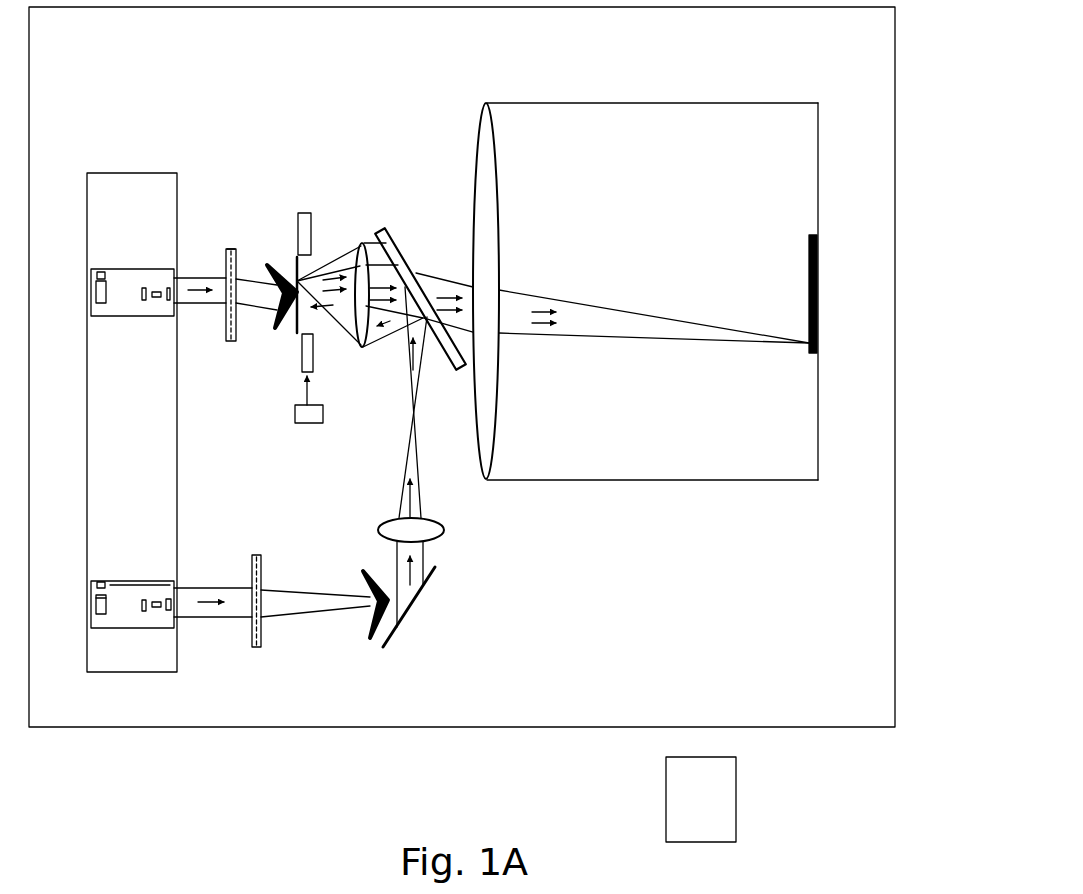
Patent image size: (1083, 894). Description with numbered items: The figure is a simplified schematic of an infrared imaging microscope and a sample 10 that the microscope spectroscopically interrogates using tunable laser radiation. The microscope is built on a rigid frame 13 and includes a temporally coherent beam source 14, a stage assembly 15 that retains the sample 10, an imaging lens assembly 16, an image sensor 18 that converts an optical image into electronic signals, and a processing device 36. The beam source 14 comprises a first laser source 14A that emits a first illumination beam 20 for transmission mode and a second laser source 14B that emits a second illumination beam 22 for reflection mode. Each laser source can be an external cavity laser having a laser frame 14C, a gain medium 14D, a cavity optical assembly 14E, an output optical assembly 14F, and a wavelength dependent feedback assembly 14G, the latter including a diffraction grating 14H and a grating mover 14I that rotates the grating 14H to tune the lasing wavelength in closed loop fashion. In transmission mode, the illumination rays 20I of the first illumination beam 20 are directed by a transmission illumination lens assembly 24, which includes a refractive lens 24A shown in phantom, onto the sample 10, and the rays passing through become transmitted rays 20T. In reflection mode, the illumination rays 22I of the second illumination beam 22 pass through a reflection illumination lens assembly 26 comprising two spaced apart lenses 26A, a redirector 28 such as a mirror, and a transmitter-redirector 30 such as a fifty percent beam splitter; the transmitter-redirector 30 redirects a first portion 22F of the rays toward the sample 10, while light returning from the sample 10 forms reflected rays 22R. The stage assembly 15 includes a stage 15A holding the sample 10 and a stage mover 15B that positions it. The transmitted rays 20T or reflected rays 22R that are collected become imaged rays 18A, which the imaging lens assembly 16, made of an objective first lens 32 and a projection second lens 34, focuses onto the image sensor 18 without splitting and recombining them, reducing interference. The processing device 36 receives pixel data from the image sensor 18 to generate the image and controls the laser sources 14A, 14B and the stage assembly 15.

The sample 10 is at (297, 267).
The rigid frame 13 is at (128, 67).
The temporally coherent beam source 14 is at (152, 457).
The first laser source 14A is at (93, 291).
The second laser source 14B is at (91, 624).
The laser frame 14C is at (117, 585).
The gain medium 14D is at (157, 602).
The cavity optical assembly 14E is at (143, 611).
The output optical assembly 14F is at (167, 611).
The wavelength dependent feedback assembly 14G is at (94, 603).
The diffraction grating 14H is at (96, 600).
The grating mover 14I is at (97, 582).
The stage assembly 15 is at (241, 419).
The stage 15A is at (300, 366).
The stage mover 15B is at (295, 418).
The imaging lens assembly 16 is at (455, 78).
The image sensor 18 is at (803, 268).
The imaged rays 18A is at (541, 326).
The first illumination beam 20 is at (197, 277).
The illumination rays 20I is at (198, 292).
The transmitted rays 20T is at (336, 268).
The second illumination beam 22 is at (210, 617).
The illumination rays 22I is at (207, 595).
The first portion 22F is at (394, 350).
The reflected rays 22R is at (346, 320).
The transmission illumination lens assembly 24 is at (229, 345).
The refractive lens 24A is at (231, 248).
The reflection illumination lens assembly 26 is at (511, 517).
The lens 26A is at (447, 535).
The redirector 28 is at (414, 607).
The transmitter-redirector 30 is at (457, 372).
The first lens 32 is at (362, 243).
The second lens 34 is at (474, 168).
The processing device 36 is at (722, 813).